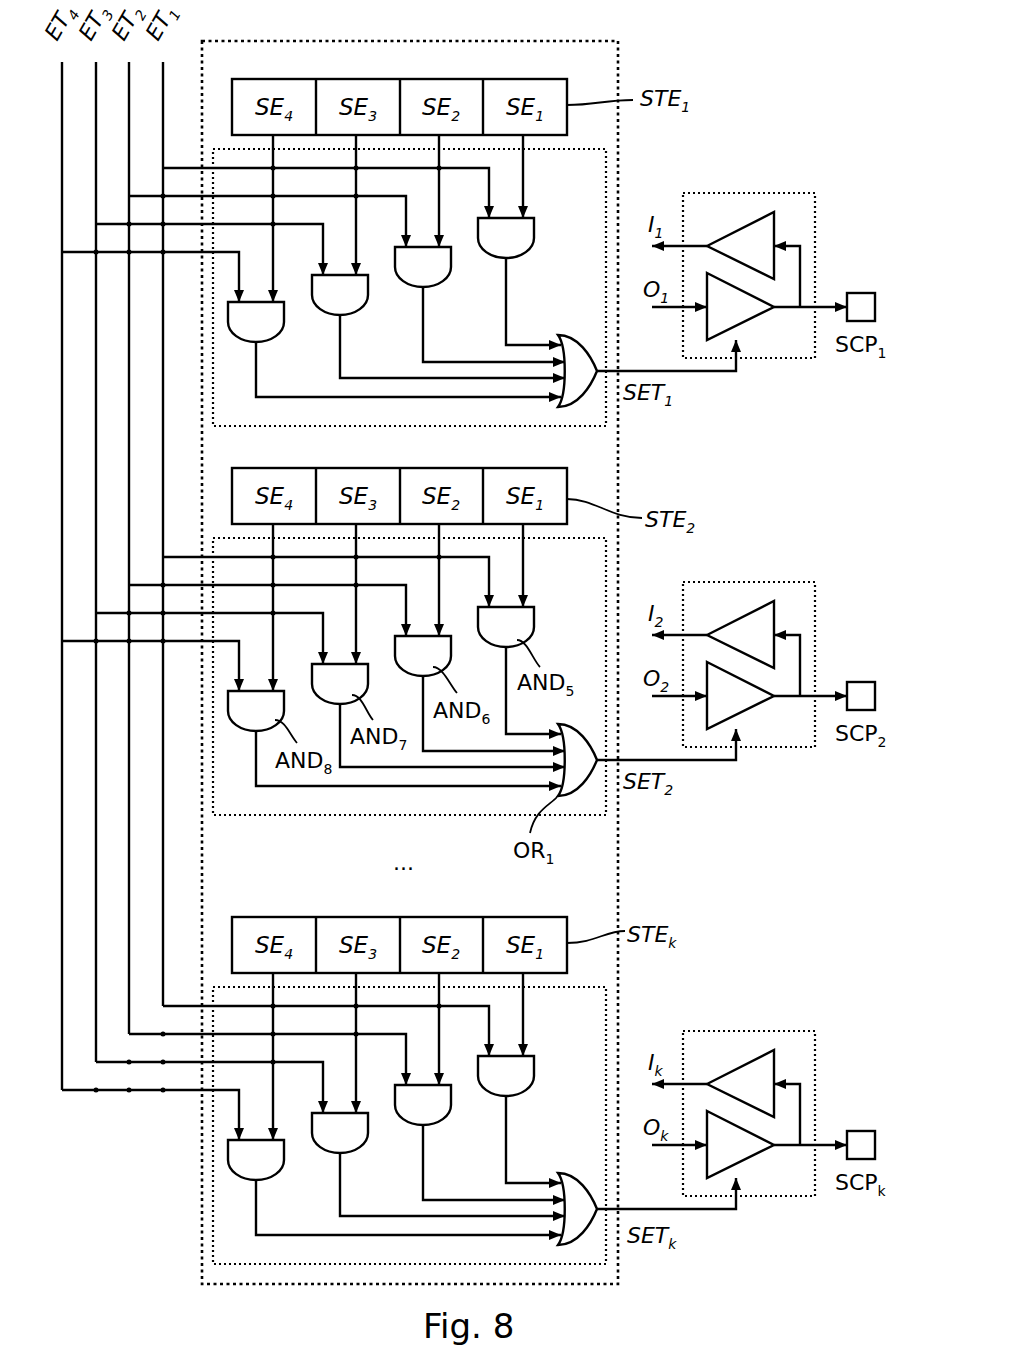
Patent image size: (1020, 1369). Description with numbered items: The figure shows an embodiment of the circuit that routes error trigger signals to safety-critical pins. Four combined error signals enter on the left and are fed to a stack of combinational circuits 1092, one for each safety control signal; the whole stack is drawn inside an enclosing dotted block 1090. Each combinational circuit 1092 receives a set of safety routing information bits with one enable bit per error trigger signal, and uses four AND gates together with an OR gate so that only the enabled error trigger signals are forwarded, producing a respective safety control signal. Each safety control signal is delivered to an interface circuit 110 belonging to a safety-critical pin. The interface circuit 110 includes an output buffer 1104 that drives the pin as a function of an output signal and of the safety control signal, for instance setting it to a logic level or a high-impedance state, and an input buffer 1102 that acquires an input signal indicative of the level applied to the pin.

The state transition element block 1090 is at (272, 41).
The interface circuit 110 is at (710, 193).
The combinational circuit 1092 is at (606, 426).
The input buffer 1102 is at (770, 607).
The output buffer 1104 is at (748, 705).